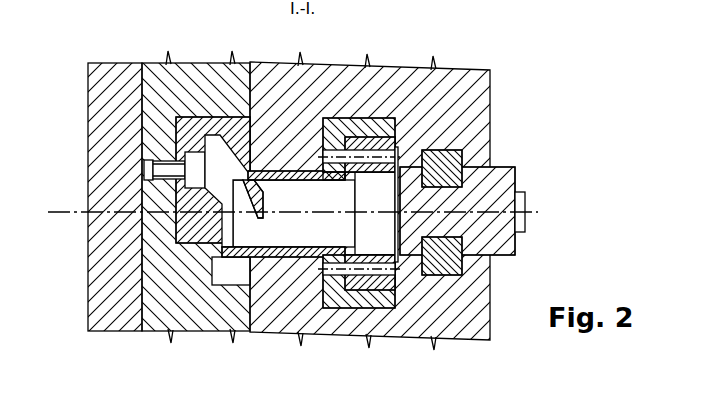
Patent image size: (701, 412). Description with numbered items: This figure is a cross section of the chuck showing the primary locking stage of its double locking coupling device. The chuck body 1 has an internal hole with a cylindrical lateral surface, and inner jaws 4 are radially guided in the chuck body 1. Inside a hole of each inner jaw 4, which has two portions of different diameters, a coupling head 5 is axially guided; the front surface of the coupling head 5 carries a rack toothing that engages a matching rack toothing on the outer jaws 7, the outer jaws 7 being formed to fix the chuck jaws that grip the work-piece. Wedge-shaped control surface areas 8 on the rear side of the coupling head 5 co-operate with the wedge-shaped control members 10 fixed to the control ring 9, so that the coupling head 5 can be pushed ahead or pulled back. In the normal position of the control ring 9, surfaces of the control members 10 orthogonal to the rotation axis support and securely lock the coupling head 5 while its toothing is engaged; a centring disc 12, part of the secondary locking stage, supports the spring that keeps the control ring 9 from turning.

The chuck body 1 is at (423, 314).
The inner jaws 4 is at (351, 117).
The coupling head 5 is at (295, 237).
The outer jaws 7 is at (500, 182).
The wedge-shaped control surface areas 8 is at (250, 200).
The control ring 9 is at (201, 308).
The wedge-shaped control members 10 is at (182, 228).
The centring disc 12 is at (92, 122).